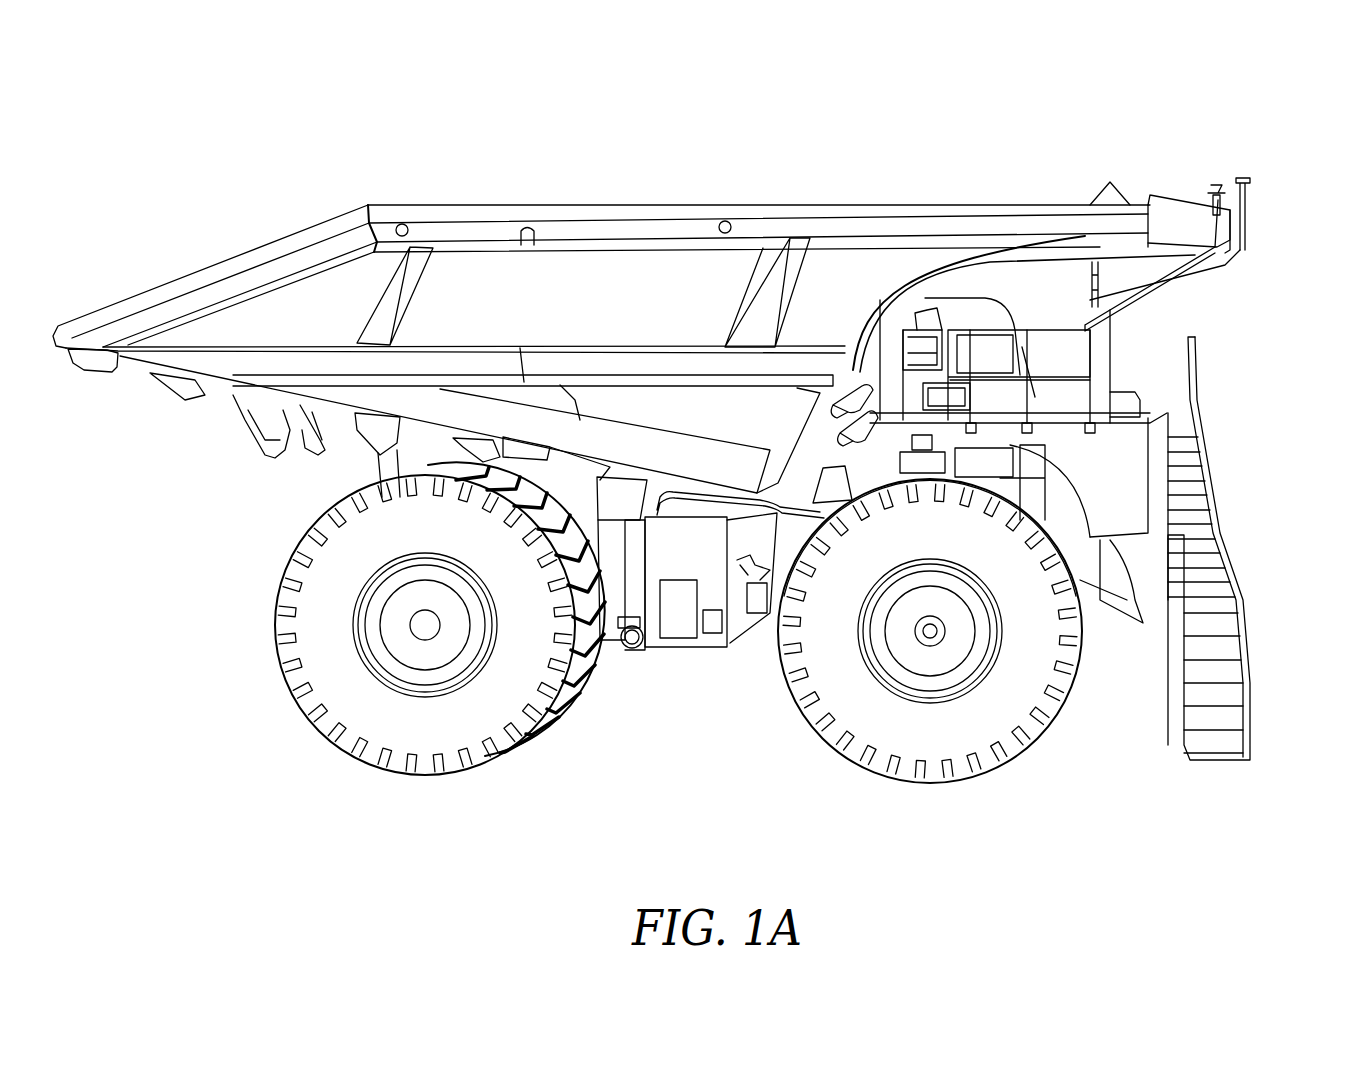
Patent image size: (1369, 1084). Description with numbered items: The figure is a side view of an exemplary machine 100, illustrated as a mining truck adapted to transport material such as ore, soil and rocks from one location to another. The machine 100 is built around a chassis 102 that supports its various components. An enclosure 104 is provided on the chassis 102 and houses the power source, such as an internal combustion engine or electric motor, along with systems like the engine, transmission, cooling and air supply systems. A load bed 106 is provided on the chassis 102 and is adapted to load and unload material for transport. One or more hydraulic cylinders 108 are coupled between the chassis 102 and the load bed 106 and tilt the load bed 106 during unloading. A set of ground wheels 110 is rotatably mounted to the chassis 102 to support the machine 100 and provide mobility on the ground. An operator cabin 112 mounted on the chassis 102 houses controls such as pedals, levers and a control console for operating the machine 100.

The machine 100 is at (1274, 110).
The chassis 102 is at (1107, 577).
The enclosure 104 is at (1120, 465).
The load bed 106 is at (599, 309).
The hydraulic cylinders 108 is at (618, 636).
The ground wheels 110 is at (305, 630).
The operator cabin 112 is at (970, 308).